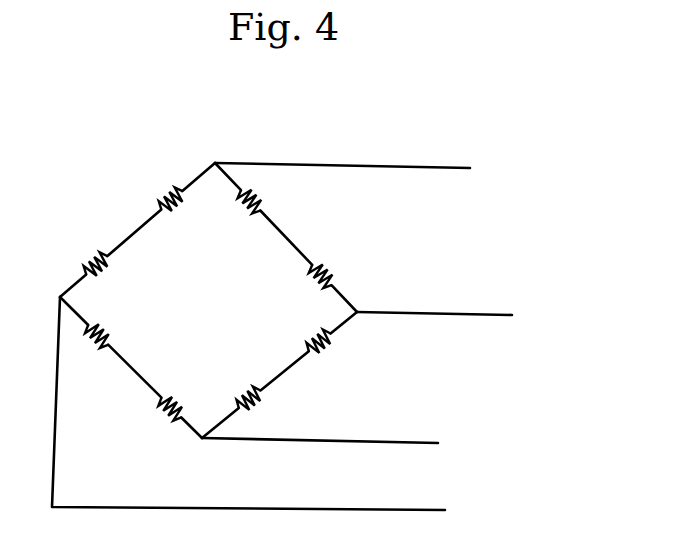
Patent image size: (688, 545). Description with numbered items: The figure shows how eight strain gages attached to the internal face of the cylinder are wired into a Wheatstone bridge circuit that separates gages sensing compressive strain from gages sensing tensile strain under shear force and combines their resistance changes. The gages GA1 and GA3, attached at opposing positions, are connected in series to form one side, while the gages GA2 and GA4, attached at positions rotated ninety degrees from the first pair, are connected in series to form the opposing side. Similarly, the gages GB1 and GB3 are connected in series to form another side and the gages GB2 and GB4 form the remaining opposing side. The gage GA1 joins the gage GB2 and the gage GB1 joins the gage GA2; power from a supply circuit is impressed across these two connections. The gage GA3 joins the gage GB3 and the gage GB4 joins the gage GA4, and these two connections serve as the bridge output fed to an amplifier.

The strain gage GB2 is at (155, 176).
The strain gage GB4 is at (83, 240).
The strain gage GA1 is at (284, 198).
The strain gage GA3 is at (359, 267).
The strain gage GB3 is at (352, 356).
The strain gage GB1 is at (282, 410).
The strain gage GA4 is at (93, 361).
The strain gage GA2 is at (148, 429).